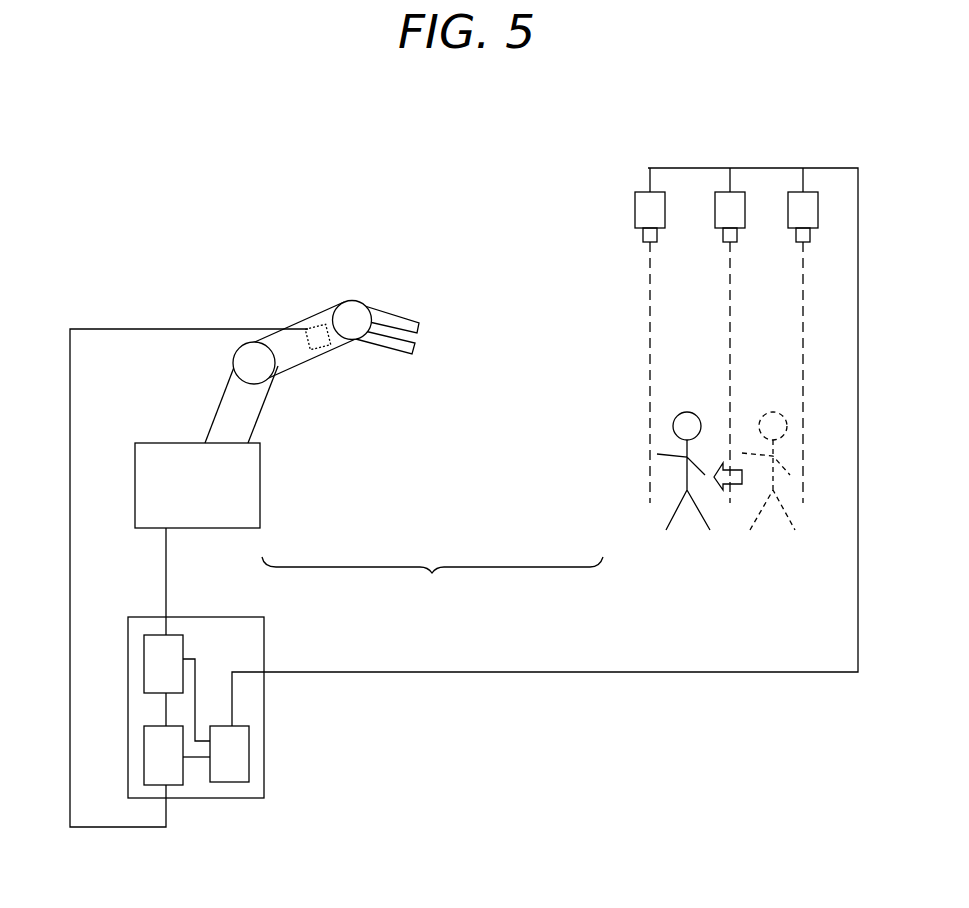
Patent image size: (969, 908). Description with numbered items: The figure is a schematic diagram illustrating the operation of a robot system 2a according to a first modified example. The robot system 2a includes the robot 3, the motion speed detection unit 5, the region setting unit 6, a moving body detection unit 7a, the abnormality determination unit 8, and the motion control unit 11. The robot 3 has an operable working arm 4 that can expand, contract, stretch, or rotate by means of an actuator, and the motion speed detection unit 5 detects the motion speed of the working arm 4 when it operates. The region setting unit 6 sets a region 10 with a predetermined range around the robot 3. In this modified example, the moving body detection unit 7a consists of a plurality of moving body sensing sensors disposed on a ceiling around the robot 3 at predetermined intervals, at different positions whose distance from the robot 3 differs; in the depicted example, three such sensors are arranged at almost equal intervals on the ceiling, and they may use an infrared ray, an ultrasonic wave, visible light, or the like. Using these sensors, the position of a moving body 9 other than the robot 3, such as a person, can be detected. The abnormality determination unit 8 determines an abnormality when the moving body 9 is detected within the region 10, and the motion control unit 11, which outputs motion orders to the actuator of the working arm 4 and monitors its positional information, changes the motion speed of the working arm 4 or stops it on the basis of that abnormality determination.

The robot system 2a is at (311, 216).
The robot 3 is at (177, 452).
The working arm 4 is at (310, 324).
The motion speed detection unit 5 is at (320, 338).
The region setting unit 6 is at (152, 758).
The moving body detection unit 7a is at (800, 215).
The abnormality determination unit 8 is at (232, 758).
The moving body 9 is at (682, 427).
The region 10 is at (432, 581).
The motion control unit 11 is at (157, 659).